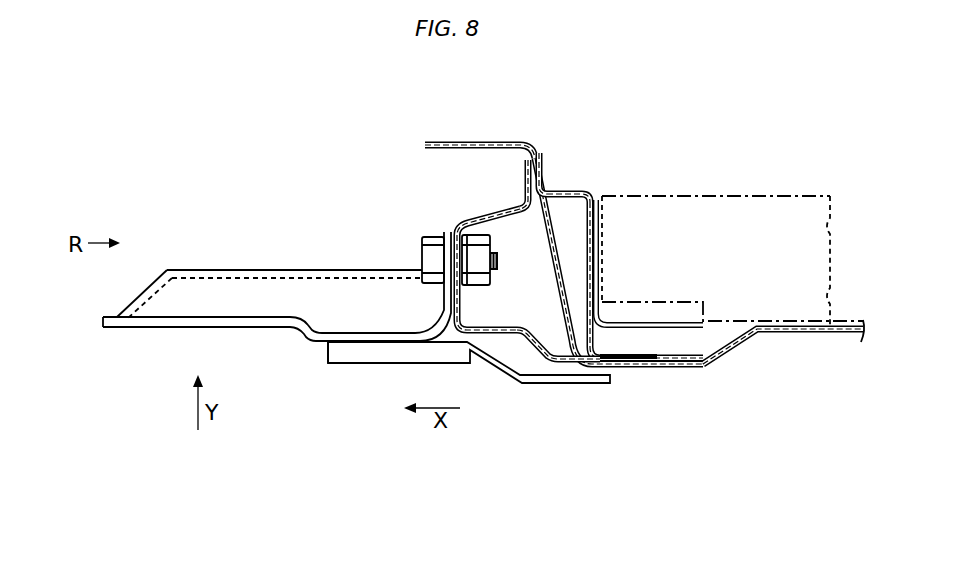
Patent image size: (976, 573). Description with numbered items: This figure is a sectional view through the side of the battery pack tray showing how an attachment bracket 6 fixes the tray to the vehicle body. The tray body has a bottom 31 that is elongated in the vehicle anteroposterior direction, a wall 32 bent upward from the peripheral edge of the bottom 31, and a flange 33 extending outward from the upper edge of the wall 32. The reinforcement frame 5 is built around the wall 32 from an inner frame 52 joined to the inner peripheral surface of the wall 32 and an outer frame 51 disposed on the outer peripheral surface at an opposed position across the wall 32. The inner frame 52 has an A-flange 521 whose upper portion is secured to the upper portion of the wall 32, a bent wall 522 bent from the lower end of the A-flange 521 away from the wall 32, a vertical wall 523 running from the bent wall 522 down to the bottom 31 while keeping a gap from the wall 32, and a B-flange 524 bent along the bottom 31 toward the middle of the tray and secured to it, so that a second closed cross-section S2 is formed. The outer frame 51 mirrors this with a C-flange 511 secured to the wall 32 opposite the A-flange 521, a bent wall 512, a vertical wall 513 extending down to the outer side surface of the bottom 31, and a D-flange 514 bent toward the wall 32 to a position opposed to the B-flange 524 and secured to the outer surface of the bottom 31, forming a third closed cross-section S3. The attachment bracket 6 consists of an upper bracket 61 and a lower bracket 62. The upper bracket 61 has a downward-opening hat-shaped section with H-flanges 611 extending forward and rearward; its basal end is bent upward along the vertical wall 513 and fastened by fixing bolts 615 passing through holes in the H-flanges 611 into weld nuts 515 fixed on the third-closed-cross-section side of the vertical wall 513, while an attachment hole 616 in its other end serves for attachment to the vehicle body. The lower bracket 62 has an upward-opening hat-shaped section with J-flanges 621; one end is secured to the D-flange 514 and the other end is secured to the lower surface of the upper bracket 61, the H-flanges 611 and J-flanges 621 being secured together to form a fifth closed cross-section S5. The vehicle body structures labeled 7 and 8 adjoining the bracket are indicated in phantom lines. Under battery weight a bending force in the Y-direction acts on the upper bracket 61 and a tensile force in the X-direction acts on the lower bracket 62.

The bottom 31 is at (730, 350).
The wall 32 is at (553, 256).
The flange 33 is at (452, 142).
The reinforcement frame 5 is at (501, 294).
The outer frame 51 is at (517, 300).
The C-flange 511 is at (528, 178).
The bent wall 512 is at (486, 206).
The vertical wall 513 is at (455, 320).
The D-flange 514 is at (642, 366).
The weld nut 515 is at (473, 293).
The inner frame 52 is at (624, 273).
The A-flange 521 is at (543, 166).
The bent wall 522 is at (591, 188).
The vertical wall 523 is at (597, 232).
The B-flange 524 is at (636, 358).
The attachment bracket 6 is at (356, 311).
The upper bracket 61 is at (305, 270).
The H-flange 611 is at (192, 316).
The fixing bolt 615 is at (423, 251).
The attachment hole 616 is at (233, 264).
The lower bracket 62 is at (374, 364).
The J-flange 621 is at (347, 347).
The floor panel 7 is at (723, 320).
The side panel 8 is at (773, 193).
The closed cross-section S2 is at (574, 218).
The closed cross-section S3 is at (500, 300).
The closed cross-section S5 is at (353, 308).